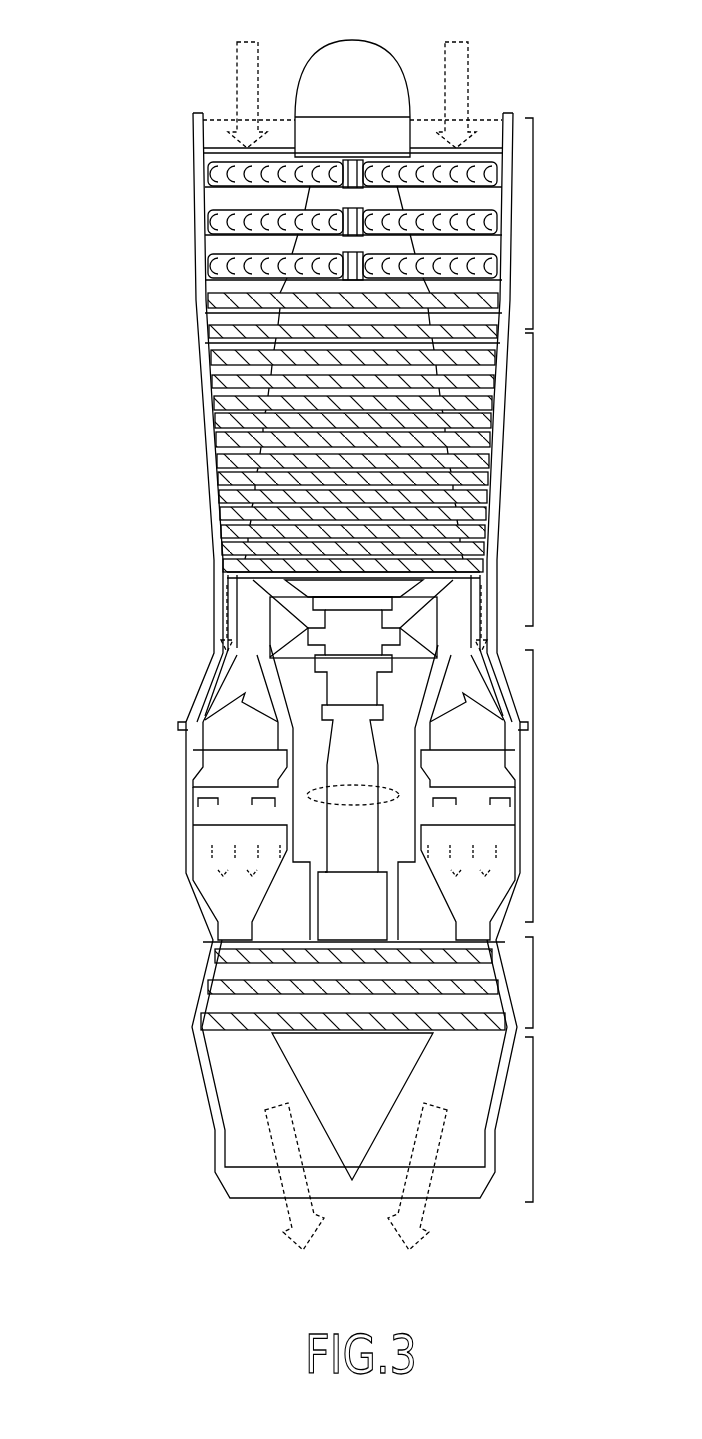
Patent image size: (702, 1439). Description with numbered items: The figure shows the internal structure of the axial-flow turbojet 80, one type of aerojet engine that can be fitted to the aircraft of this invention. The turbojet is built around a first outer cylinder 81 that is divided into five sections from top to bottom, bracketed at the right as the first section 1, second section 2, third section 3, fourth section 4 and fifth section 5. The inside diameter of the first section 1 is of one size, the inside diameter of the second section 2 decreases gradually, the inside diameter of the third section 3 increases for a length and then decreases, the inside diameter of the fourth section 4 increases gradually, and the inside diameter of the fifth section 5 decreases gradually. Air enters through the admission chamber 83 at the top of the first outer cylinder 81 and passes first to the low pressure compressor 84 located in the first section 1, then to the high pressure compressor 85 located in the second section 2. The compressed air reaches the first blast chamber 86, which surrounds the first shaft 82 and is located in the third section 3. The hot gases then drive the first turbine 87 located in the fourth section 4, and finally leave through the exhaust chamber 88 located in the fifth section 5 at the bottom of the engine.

The axial-flow turbojet 80 is at (155, 160).
The first outer cylinder 81 is at (197, 283).
The first shaft 82 is at (340, 692).
The admission chamber 83 is at (278, 128).
The low pressure compressor 84 is at (207, 212).
The high pressure compressor 85 is at (213, 410).
The first blast chamber 86 is at (233, 728).
The first turbine 87 is at (303, 983).
The exhaust chamber 88 is at (245, 1098).
The first section 1 is at (313, 164).
The second section 2 is at (323, 459).
The third section 3 is at (317, 756).
The fourth section 4 is at (331, 988).
The fifth section 5 is at (339, 1141).